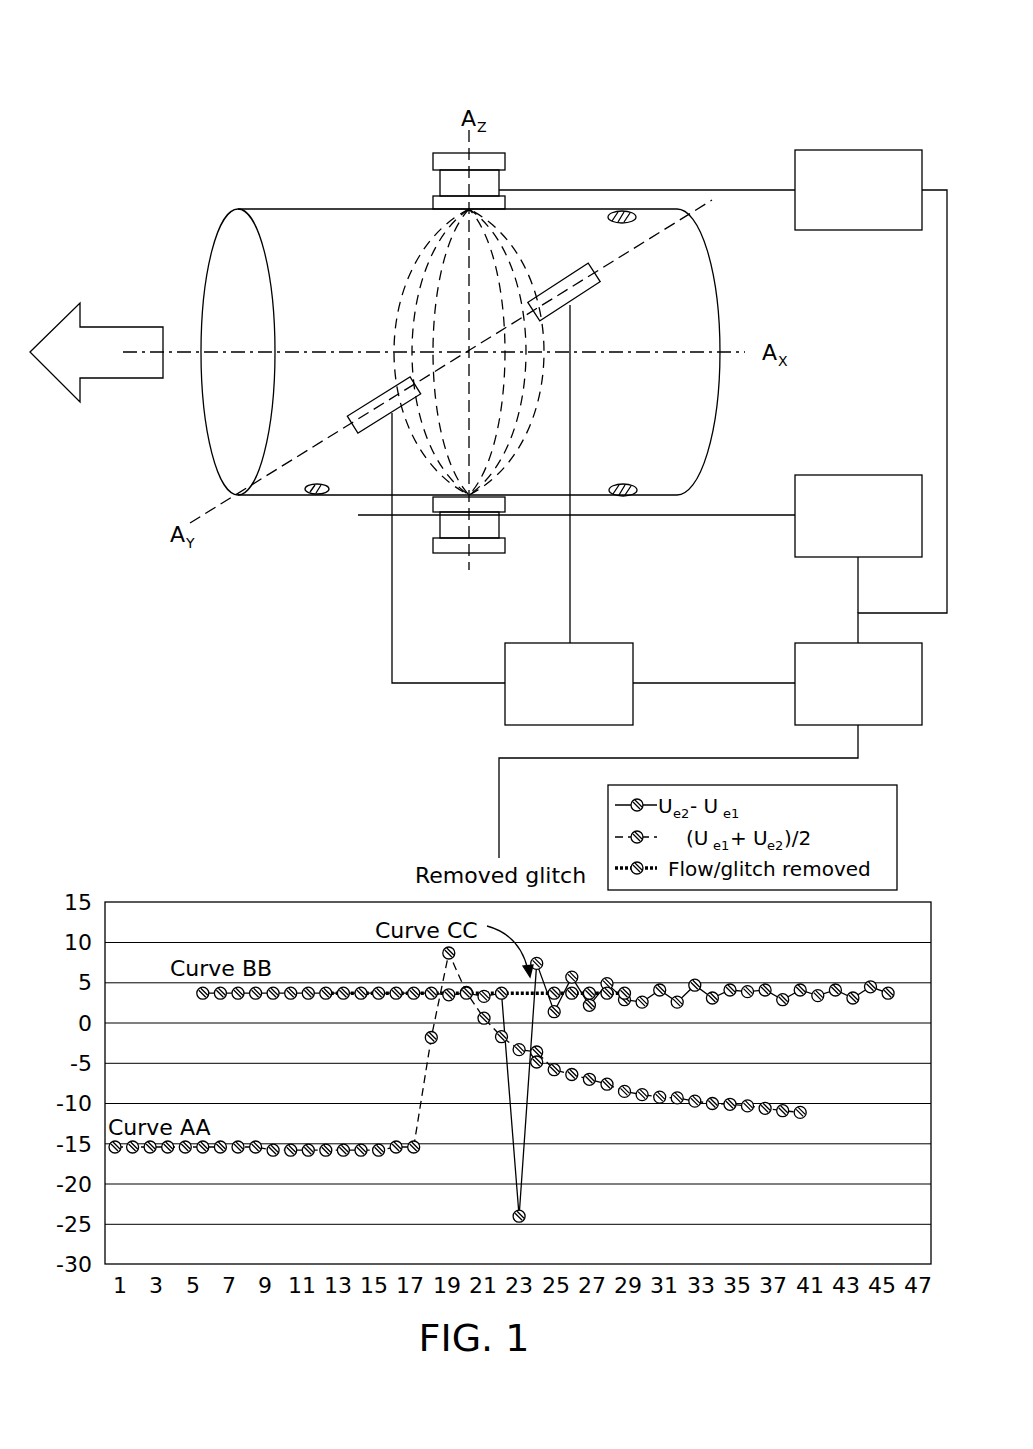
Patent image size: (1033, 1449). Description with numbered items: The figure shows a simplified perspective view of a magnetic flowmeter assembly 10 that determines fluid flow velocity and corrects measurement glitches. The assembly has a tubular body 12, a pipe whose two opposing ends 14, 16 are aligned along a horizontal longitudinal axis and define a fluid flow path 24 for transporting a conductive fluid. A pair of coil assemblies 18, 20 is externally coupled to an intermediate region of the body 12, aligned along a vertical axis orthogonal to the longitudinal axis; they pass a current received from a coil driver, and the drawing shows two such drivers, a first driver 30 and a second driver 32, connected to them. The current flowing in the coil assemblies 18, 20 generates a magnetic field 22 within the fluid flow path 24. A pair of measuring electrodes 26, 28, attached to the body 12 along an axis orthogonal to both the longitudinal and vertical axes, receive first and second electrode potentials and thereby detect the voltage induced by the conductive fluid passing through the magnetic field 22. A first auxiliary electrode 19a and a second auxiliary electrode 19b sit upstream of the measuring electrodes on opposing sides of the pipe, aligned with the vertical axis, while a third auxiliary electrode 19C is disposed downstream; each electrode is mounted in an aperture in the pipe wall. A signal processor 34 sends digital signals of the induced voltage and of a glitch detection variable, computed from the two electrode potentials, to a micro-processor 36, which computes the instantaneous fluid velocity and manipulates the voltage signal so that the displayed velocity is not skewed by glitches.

The magnetic flowmeter assembly 10 is at (207, 70).
The tubular body 12 is at (275, 207).
The opposing end 14 is at (220, 256).
The opposing end 16 is at (708, 255).
The coil assembly 18 is at (443, 153).
The coil assembly 20 is at (457, 553).
The magnetic field 22 is at (402, 278).
The fluid flow path 24 is at (108, 338).
The measuring electrode 26 is at (371, 430).
The measuring electrode 28 is at (598, 295).
The first auxiliary electrode 19a is at (622, 211).
The second auxiliary electrode 19b is at (626, 497).
The third auxiliary electrode 19C is at (310, 495).
The Driver #1 30 is at (858, 150).
The Driver #2 32 is at (858, 475).
The signal processor 34 is at (633, 710).
The micro-processor 36 is at (905, 725).